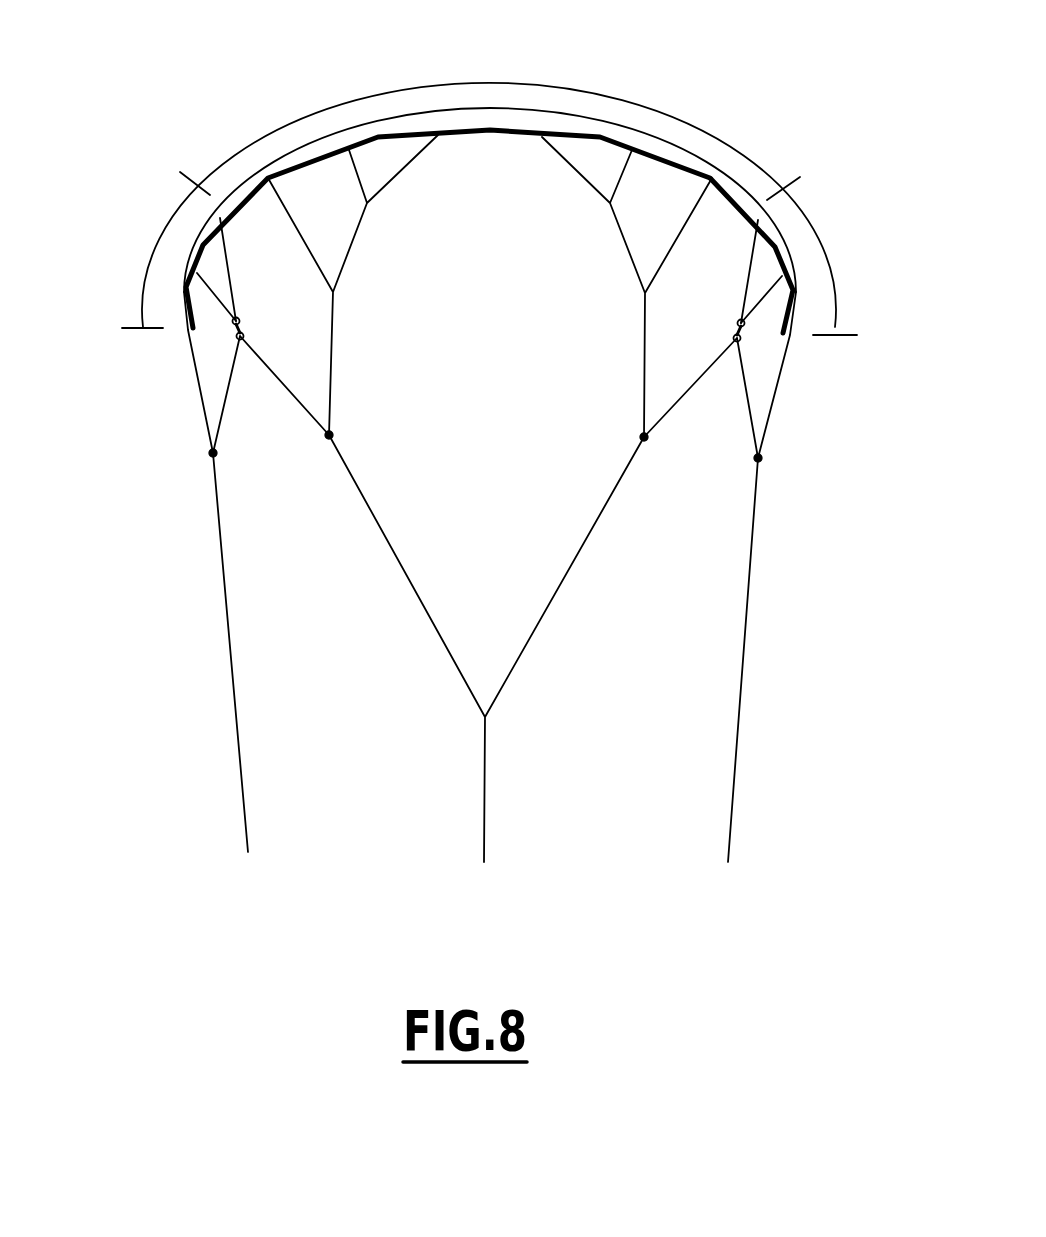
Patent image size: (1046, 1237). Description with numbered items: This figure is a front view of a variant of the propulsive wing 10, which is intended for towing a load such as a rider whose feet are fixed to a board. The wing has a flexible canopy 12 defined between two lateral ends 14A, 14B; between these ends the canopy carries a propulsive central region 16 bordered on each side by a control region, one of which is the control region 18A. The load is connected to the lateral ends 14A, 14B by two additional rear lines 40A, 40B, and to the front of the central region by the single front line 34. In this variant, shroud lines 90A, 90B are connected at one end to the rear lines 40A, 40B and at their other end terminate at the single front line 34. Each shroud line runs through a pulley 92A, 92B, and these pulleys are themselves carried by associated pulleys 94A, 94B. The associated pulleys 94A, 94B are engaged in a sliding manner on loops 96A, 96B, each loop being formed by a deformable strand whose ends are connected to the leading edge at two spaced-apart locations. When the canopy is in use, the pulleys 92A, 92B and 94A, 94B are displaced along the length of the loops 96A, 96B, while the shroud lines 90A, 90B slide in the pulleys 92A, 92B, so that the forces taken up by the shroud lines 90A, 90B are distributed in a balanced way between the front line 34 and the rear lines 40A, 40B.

The propulsive wing 10 is at (267, 102).
The flexible canopy 12 is at (540, 122).
The propulsive central region 16 is at (488, 75).
The control region 18A is at (175, 207).
The lateral end 14A is at (170, 337).
The lateral end 14B is at (803, 340).
The front line 34 is at (485, 800).
The rear line 40A is at (222, 570).
The rear line 40B is at (743, 660).
The shroud line 90A is at (277, 380).
The shroud line 90B is at (687, 392).
The pulley 92A is at (244, 336).
The pulley 92B is at (733, 339).
The associated pulley 94A is at (240, 320).
The associated pulley 94B is at (737, 325).
The loop 96A is at (234, 298).
The loop 96B is at (744, 297).